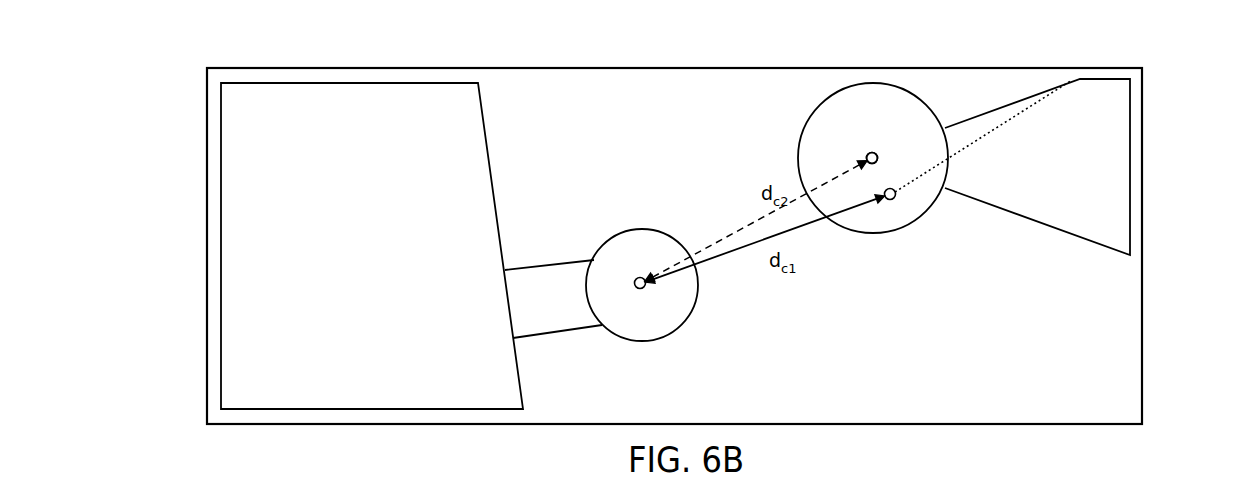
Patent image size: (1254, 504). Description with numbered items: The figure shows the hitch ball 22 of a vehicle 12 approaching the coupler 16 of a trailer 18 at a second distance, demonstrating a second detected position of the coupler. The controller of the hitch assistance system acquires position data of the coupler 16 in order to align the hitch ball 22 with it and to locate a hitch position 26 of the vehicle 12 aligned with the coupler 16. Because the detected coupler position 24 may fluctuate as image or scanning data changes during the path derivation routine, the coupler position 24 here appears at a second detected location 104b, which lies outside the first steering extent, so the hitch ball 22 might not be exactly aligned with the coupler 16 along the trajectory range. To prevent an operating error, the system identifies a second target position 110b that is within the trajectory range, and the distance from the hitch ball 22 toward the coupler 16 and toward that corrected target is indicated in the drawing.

The vehicle 12 is at (252, 256).
The coupler 16 is at (880, 110).
The trailer 18 is at (1117, 190).
The hitch ball 22 is at (612, 268).
The coupler position 24 is at (865, 156).
The second detected location 104b is at (872, 158).
The hitch position 26 is at (643, 288).
The second target position 110b is at (893, 200).